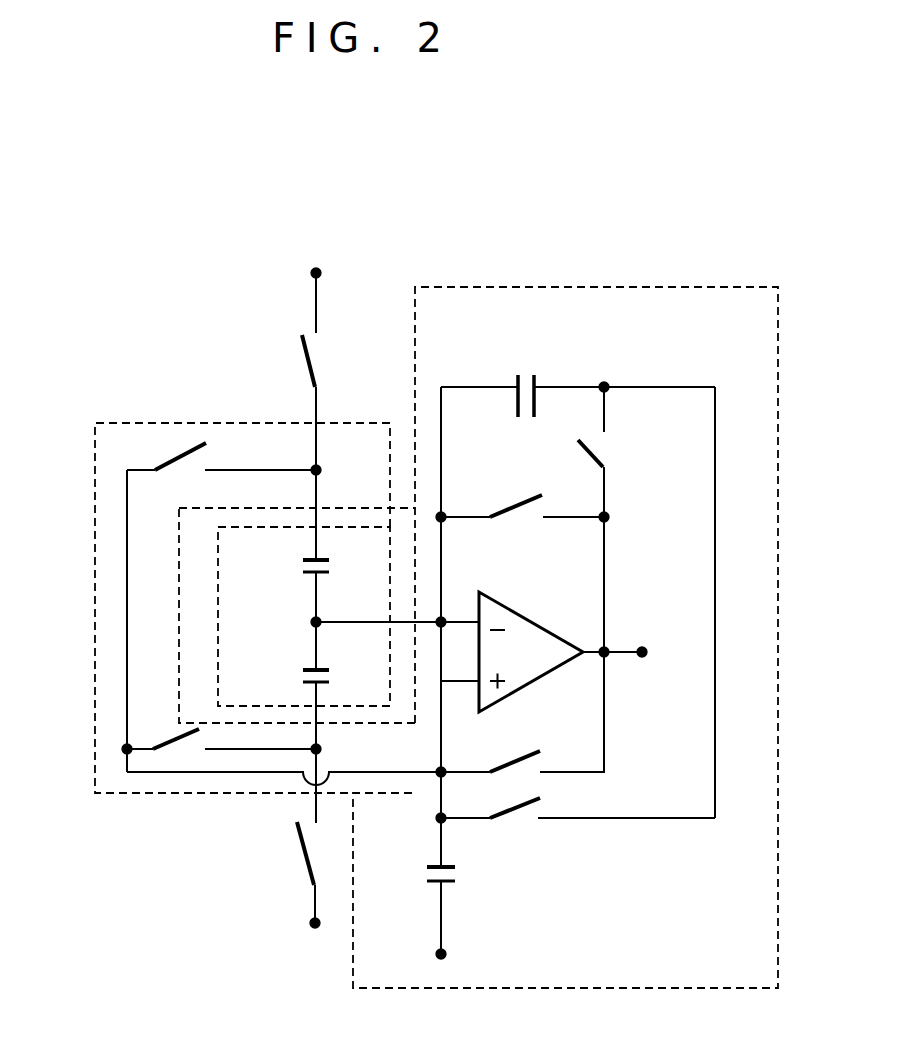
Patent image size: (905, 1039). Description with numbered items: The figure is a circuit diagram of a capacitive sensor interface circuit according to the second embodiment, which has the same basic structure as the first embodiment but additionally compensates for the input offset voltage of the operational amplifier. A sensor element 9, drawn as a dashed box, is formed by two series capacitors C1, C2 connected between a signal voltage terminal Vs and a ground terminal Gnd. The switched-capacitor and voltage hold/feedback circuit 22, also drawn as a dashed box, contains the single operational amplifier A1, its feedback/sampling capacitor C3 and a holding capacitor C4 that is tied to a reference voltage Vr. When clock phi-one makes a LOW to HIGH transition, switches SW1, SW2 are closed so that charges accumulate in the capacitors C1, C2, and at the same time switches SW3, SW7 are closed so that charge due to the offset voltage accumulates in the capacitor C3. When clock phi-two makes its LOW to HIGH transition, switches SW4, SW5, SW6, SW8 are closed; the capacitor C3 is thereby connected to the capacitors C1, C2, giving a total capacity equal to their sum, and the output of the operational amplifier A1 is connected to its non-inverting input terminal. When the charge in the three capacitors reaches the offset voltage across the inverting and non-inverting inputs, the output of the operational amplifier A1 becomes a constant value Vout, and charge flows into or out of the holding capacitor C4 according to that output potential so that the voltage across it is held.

The switched-capacitor and voltage hold/feedback circuit 22 is at (570, 290).
The sensor element 9 is at (218, 627).
The switch SW1 is at (302, 353).
The switch SW2 is at (302, 847).
The switch SW3 is at (517, 503).
The switch SW4 is at (180, 453).
The switch SW5 is at (163, 745).
The switch SW6 is at (517, 753).
The switch SW7 is at (513, 815).
The switch SW8 is at (595, 452).
The capacitor C1 is at (300, 570).
The capacitor C2 is at (300, 677).
The feedback/sampling capacitor C3 is at (527, 375).
The holding capacitor C4 is at (424, 873).
The operational amplifier A1 is at (537, 645).
The signal voltage Vs is at (340, 300).
The output voltage Vout is at (641, 635).
The ground Gnd is at (282, 923).
The reference voltage Vr is at (460, 941).